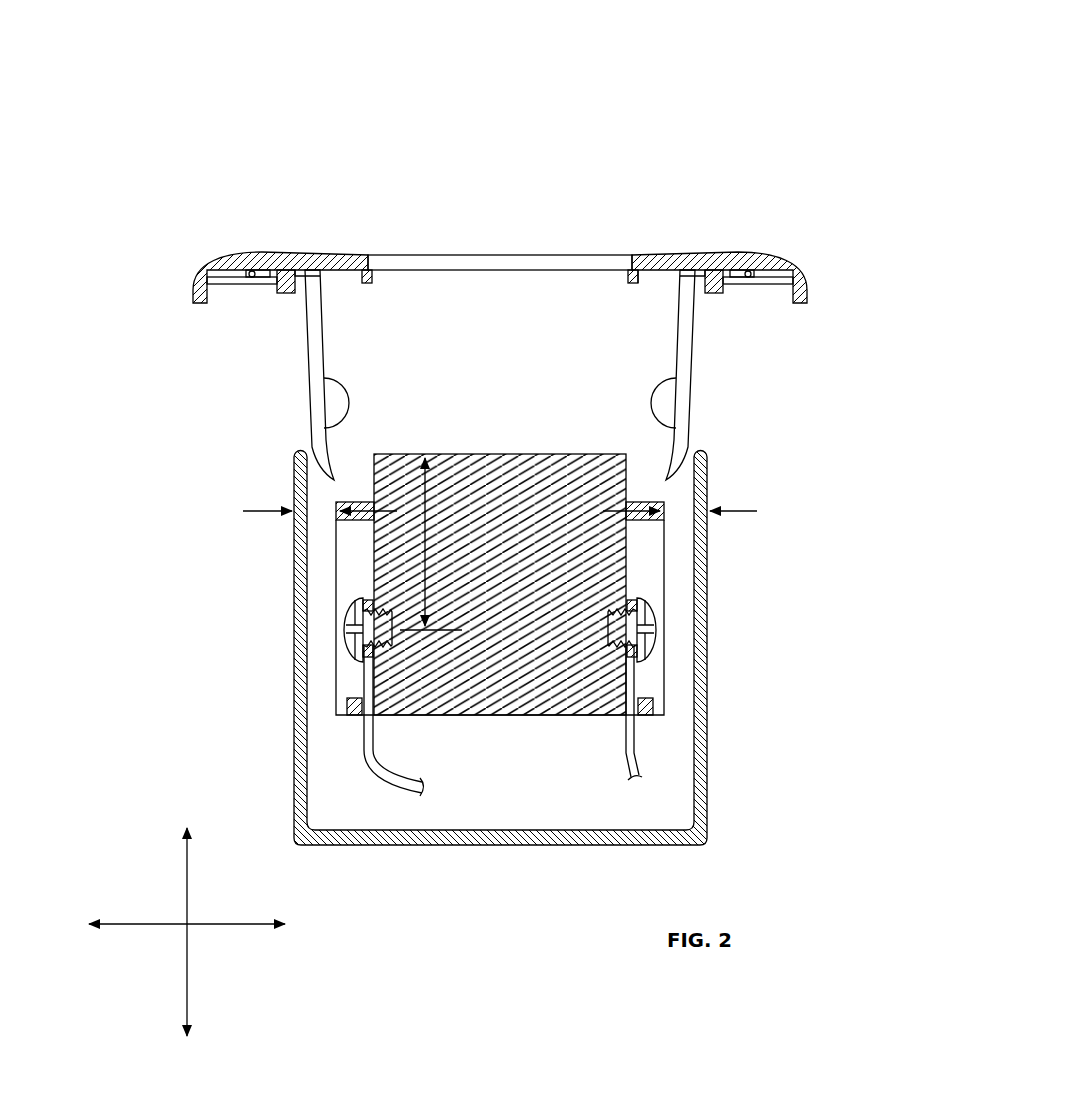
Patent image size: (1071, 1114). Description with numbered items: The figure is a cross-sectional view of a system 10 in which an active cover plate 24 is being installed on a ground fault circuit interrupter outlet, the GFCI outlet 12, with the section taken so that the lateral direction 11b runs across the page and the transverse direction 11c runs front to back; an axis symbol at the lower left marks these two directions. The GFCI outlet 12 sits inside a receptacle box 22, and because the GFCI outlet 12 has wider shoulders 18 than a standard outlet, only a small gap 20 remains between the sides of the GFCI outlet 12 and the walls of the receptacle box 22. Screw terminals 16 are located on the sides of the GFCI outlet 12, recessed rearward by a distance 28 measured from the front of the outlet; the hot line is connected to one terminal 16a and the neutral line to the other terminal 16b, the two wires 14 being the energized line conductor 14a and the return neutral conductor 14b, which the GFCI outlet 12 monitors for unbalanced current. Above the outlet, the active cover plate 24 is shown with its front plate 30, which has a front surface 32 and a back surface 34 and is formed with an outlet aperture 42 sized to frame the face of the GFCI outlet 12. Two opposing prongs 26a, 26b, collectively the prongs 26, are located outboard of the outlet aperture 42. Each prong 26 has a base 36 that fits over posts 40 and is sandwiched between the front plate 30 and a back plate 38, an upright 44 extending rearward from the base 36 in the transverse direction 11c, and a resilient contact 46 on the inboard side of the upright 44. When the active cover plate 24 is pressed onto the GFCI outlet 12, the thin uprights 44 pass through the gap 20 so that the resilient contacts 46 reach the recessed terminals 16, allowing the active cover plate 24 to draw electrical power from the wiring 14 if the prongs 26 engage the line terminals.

The system 10 is at (340, 104).
The lateral direction 11b is at (228, 925).
The transverse direction 11c is at (187, 867).
The ground fault circuit interrupter (GFCI) outlet 12 is at (530, 436).
The wires 14 is at (503, 722).
The energized (line) conductor 14a is at (399, 782).
The return (neutral) conductor 14b is at (628, 772).
The terminals 16 is at (503, 619).
The terminal 16a is at (346, 610).
The terminal 16b is at (645, 612).
The shoulders 18 is at (356, 499).
The gap 20 is at (265, 510).
The receptacle box 22 is at (707, 695).
The active cover plate 24 is at (822, 252).
The prongs 26 is at (502, 375).
The prong 26a is at (300, 348).
The prong 26b is at (702, 380).
The distance 28 is at (426, 490).
The front plate 30 is at (663, 255).
The front surface 32 is at (645, 252).
The back surface 34 is at (650, 273).
The base 36 is at (302, 256).
The back plate 38 is at (232, 300).
The posts 40 is at (285, 256).
The outlet aperture 42 is at (360, 256).
The upright 44 is at (324, 327).
The resilient contact 46 is at (346, 390).